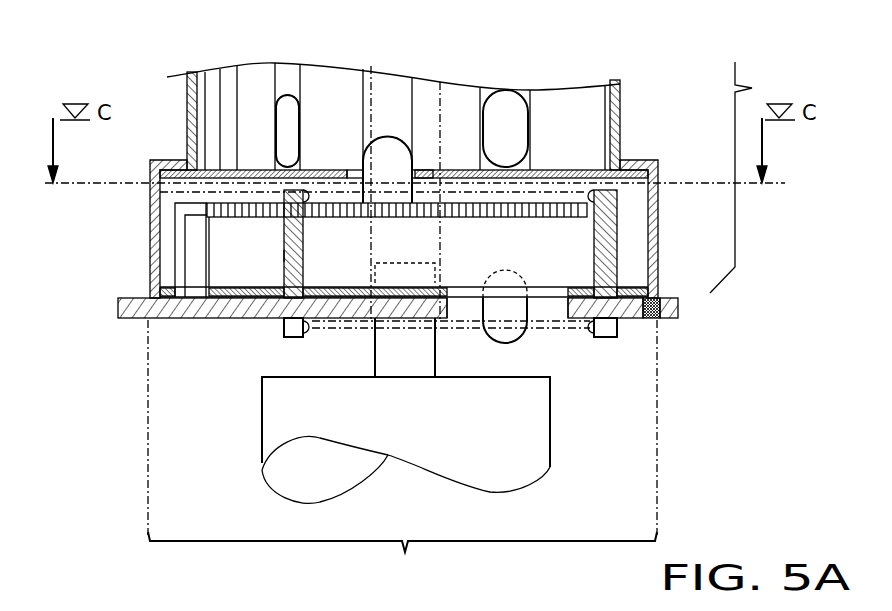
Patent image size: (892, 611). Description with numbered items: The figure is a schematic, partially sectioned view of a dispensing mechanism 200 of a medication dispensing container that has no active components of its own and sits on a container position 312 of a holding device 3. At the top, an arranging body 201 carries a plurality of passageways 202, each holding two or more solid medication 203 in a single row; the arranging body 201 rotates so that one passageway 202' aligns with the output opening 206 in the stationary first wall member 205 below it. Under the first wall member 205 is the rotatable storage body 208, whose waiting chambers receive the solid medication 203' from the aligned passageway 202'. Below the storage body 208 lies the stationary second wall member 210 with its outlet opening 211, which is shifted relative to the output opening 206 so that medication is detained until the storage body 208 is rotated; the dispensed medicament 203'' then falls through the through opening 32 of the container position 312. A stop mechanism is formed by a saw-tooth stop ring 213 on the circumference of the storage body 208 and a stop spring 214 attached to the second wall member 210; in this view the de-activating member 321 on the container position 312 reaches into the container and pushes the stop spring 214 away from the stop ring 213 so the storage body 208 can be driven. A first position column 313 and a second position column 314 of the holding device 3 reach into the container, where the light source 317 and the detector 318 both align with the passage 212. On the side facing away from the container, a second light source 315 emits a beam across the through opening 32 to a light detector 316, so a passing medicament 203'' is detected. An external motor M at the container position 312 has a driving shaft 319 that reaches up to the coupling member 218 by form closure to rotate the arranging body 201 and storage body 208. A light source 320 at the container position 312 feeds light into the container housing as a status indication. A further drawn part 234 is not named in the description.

The dispensing mechanism 200 is at (754, 177).
The arranging body 201 is at (582, 108).
The passageways 202 is at (265, 88).
The passageway 202' is at (390, 109).
The solid medication 203 is at (506, 97).
The solid medication 203' is at (407, 230).
The medicament 203'' is at (498, 351).
The first wall member 205 is at (157, 176).
The output opening 206 is at (430, 152).
The storage body 208 is at (220, 255).
The second wall member 210 is at (633, 325).
The outlet opening 211 is at (546, 281).
The passage 212 is at (580, 197).
The stop ring 213 is at (222, 201).
The stop spring 214 is at (185, 222).
The coupling member 218 is at (440, 228).
The right pillar wall 234 is at (620, 103).
The holding device 3 is at (668, 322).
The through opening 32 is at (552, 327).
The container position 312 is at (402, 451).
The first position column 313 is at (283, 256).
The second position column 314 is at (610, 247).
The second light source 315 is at (283, 330).
The light detector 316 is at (602, 332).
The light source 317 is at (303, 238).
The detector 318 is at (660, 184).
The driving shaft 319 is at (402, 360).
The light source 320 is at (660, 297).
The de-activating member 321 is at (197, 291).